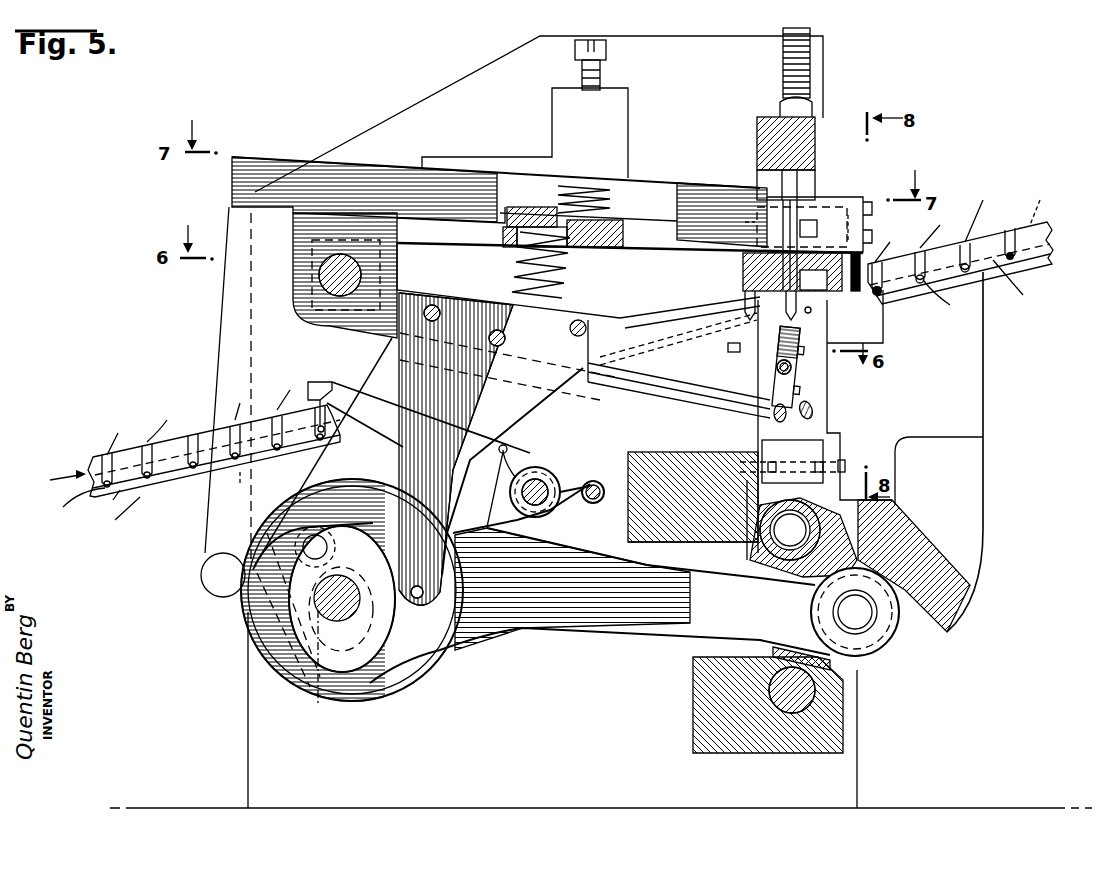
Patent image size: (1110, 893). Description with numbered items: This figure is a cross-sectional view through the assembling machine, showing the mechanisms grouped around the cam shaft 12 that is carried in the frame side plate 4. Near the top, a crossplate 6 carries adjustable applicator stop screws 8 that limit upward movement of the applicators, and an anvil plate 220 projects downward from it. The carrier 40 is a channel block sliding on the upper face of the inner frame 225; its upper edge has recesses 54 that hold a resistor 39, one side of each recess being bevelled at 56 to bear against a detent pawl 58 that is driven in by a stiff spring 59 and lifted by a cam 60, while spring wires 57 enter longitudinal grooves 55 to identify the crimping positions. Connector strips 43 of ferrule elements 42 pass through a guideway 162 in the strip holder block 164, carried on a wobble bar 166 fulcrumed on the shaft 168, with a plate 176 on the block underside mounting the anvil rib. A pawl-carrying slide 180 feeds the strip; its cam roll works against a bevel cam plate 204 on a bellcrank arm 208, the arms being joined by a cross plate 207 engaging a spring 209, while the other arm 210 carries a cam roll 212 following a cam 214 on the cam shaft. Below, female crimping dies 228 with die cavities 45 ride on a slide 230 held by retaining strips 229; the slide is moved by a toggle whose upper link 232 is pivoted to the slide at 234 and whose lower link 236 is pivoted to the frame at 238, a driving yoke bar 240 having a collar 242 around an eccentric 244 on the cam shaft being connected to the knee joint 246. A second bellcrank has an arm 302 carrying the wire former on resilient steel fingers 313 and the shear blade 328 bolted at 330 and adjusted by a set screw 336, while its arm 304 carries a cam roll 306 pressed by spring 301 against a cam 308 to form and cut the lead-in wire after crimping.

The right side plate 4 is at (517, 60).
The crossplate 6 is at (760, 135).
The applicator stop screw 8 is at (782, 76).
The cam shaft 12 is at (347, 602).
The resistor 39 is at (84, 509).
The carrier 40 is at (1058, 227).
The connector ferrule 42 is at (978, 289).
The connector strip 43 is at (744, 278).
The female die cavity 45 is at (812, 310).
The recess 54 is at (543, 319).
The longitudinal groove 55 is at (631, 342).
The bevelled side 56 is at (546, 322).
The spring wires 57 is at (706, 299).
The detent pawl 58 is at (316, 383).
The stiff spring 59 is at (566, 488).
The cam 60 is at (327, 665).
The guideway 162 is at (801, 272).
The strip holder block 164 is at (727, 231).
The wobble bar 166 is at (612, 238).
The shaft 168 is at (345, 274).
The plate 176 is at (744, 288).
The pawl-carrying slide 180 is at (827, 231).
The bevel cam plate 204 is at (870, 250).
The cross plate 207 is at (470, 163).
The bellcrank arm 208 is at (252, 170).
The spring 209 is at (560, 190).
The bellcrank arm 210 is at (213, 513).
The cam roll 212 is at (210, 570).
The cam 214 is at (270, 527).
The anvil plate 220 is at (820, 207).
The inner frame 225 is at (1043, 408).
The female crimping die 228 is at (828, 328).
The retaining strip 229 is at (840, 424).
The slide 230 is at (760, 492).
The upper link 232 is at (797, 563).
The pivot 234 is at (760, 522).
The lower link 236 is at (856, 668).
The pivot 238 is at (768, 700).
The driving yoke bar 240 is at (599, 612).
The collar 242 is at (417, 653).
The eccentric 244 is at (430, 637).
The knee joint 246 is at (875, 622).
The spring 301 is at (520, 286).
The arm 302 is at (627, 330).
The arm 304 is at (415, 468).
The cam roll 306 is at (460, 600).
The cam 308 is at (263, 620).
The steel fingers 313 is at (685, 388).
The shear blade 328 is at (768, 380).
The bolt 330 is at (806, 382).
The set screw 336 is at (740, 350).